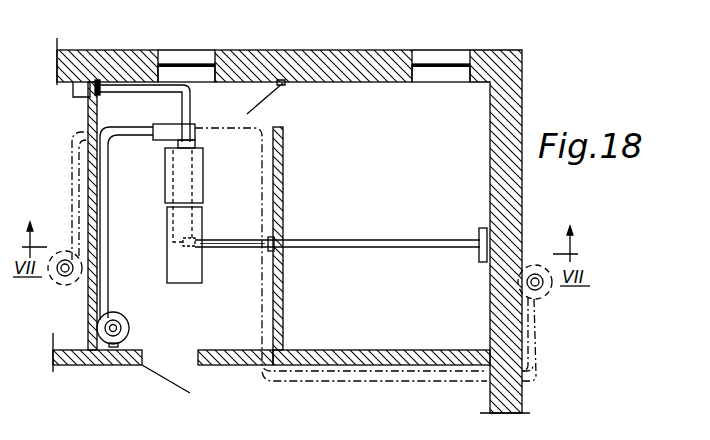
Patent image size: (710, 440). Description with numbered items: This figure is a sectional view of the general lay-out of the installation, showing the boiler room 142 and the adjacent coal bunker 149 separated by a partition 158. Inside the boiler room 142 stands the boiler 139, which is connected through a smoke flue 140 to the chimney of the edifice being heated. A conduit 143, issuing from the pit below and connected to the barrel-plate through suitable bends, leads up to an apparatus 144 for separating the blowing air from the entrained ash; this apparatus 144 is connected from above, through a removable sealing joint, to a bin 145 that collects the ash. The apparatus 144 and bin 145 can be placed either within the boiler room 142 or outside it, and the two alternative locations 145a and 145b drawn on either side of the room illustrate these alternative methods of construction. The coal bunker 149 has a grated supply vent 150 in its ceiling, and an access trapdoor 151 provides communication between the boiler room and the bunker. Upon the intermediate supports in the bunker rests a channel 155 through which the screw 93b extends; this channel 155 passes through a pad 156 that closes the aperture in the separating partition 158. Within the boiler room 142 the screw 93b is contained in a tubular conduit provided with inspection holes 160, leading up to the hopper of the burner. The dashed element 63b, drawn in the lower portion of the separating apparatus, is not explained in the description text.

The boiler 139 is at (201, 172).
The smoke flue 140 is at (192, 101).
The boiler room 142 is at (235, 338).
The conduit 143 is at (120, 128).
The apparatus for separating the blowing air and the entrained ash 144 is at (137, 311).
The bin 145 is at (129, 342).
The location of the bin 145a is at (57, 253).
The location of the bin 145b is at (540, 262).
The coal bunker 149 is at (381, 232).
The grated supply vent 150 is at (440, 73).
The access trapdoor 151 is at (258, 84).
The channel 155 is at (431, 240).
The pad 156 is at (283, 222).
The separating partition 158 is at (286, 152).
The inspection holes 160 is at (232, 247).
The plunger 63b is at (196, 226).
The screw 93b is at (360, 241).